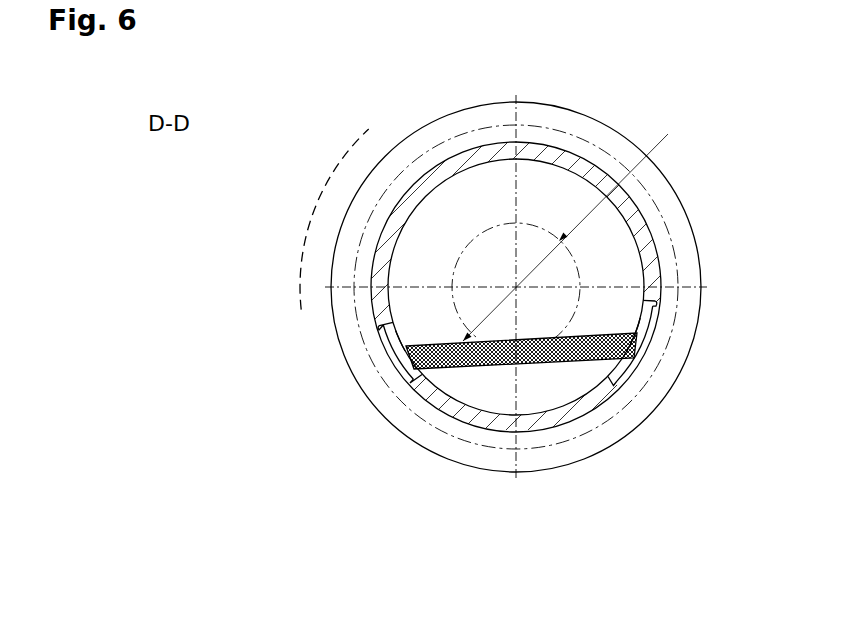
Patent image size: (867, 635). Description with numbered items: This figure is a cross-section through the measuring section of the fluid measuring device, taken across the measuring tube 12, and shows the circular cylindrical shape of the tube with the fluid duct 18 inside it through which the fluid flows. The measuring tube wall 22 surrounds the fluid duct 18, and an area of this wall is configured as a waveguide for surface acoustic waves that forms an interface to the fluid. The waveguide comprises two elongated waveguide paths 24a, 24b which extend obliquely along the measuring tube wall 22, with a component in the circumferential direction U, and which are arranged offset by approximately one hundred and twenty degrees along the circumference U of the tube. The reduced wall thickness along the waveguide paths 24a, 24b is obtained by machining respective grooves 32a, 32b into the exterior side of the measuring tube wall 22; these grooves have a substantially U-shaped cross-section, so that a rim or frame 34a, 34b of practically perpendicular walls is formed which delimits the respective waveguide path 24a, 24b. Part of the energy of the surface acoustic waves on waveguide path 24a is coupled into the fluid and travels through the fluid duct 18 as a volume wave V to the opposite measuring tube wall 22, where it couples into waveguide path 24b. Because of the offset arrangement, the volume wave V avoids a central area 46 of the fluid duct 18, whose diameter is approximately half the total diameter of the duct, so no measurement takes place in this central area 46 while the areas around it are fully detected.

The measuring tube 12 is at (585, 160).
The fluid duct 18 is at (477, 195).
The measuring tube wall 22 is at (588, 395).
The waveguide path 24a is at (637, 345).
The waveguide path 24b is at (410, 380).
The groove 32a is at (632, 365).
The groove 32b is at (395, 359).
The frame 34a is at (652, 303).
The frame 34b is at (383, 326).
The central area 46 is at (471, 250).
The volume wave V is at (538, 365).
The circumferential direction U is at (301, 247).